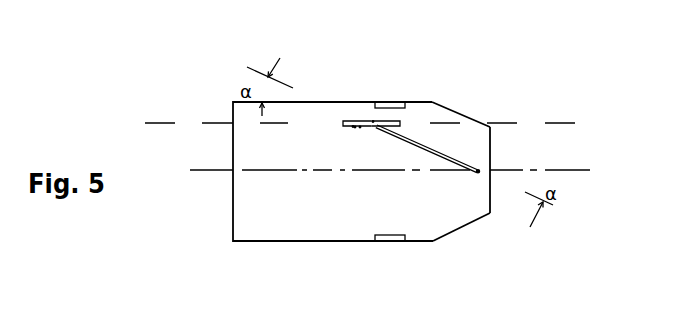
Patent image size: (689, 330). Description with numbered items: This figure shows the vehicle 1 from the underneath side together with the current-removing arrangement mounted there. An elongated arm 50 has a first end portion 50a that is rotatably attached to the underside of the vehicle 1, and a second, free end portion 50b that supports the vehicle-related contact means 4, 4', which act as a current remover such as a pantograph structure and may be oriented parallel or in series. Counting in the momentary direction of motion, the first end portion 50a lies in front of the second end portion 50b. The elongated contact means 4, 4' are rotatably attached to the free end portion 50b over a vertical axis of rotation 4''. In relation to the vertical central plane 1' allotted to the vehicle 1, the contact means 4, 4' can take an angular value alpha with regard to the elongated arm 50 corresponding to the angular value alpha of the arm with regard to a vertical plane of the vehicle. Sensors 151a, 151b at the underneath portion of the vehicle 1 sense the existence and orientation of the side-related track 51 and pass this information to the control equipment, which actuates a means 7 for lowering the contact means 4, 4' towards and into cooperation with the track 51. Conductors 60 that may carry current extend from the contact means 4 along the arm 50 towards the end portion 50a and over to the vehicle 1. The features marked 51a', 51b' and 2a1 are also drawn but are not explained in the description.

The vehicle 1 is at (298, 161).
The vertical central plane 1' is at (356, 196).
The contact means 4 is at (264, 142).
The contact means 4' is at (364, 77).
The vertical axis of rotation 4'' is at (311, 202).
The means for lowering contact means 7 is at (440, 155).
The elongated arm 50 is at (418, 135).
The conductors 60 is at (517, 144).
The first end portion of the elongated arm 50a is at (471, 170).
The second end or free portion of the elongated arm 50b is at (360, 126).
The side related track 51 is at (557, 123).
The upper recess 51a' is at (424, 70).
The lower recess 51b' is at (404, 265).
The sensor 151a is at (352, 121).
The sensor 151b is at (308, 70).
The reference axis 2a1 is at (560, 145).